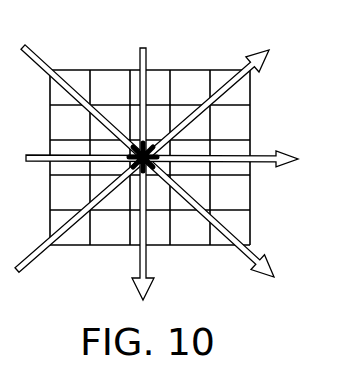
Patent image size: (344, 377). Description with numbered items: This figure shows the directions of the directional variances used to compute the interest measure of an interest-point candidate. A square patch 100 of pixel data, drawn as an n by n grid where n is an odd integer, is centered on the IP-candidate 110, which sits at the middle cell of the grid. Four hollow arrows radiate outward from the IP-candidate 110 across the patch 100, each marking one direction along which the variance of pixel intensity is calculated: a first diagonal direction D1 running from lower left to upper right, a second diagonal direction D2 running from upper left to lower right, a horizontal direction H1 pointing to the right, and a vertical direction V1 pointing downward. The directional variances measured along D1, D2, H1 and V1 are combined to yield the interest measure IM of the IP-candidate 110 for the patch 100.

The patch 100 is at (187, 69).
The IP-candidate 110 is at (150, 154).
The D1 directional variance direction D1 is at (164, 161).
The D2 directional variance direction D2 is at (167, 161).
The H1 directional variance direction H1 is at (176, 170).
The V1 directional variance direction V1 is at (170, 175).